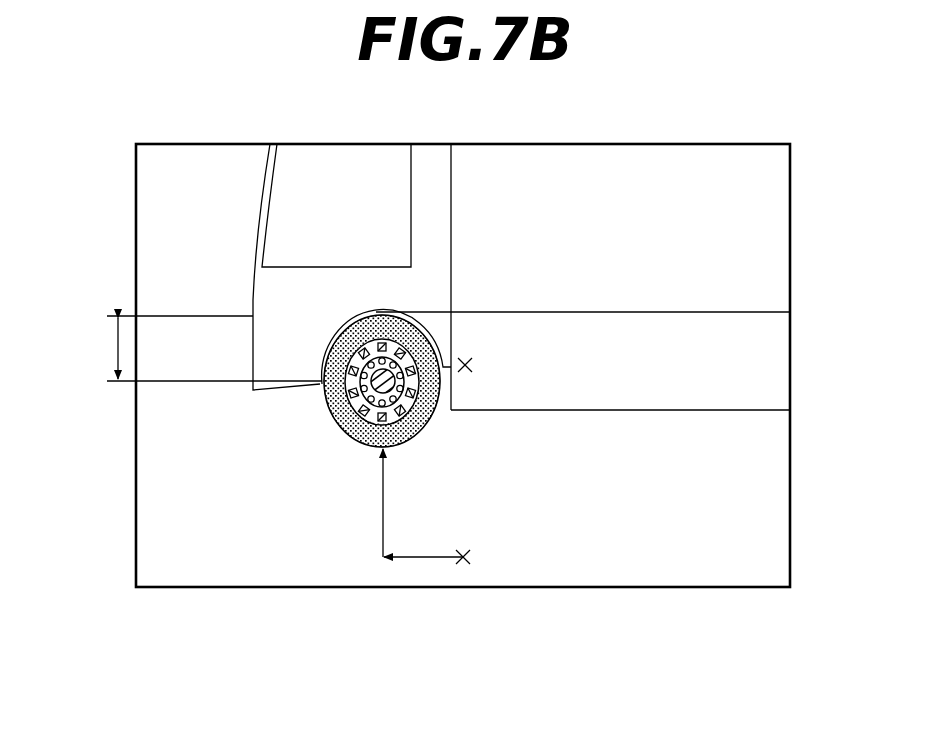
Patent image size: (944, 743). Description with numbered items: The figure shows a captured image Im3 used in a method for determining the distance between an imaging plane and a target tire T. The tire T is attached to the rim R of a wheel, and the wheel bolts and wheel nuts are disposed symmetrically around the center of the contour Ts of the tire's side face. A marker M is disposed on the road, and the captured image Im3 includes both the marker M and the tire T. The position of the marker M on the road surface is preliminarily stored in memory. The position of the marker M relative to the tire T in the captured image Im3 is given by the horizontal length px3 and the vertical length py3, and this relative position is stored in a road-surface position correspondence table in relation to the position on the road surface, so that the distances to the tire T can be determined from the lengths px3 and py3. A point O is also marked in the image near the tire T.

The captured image Im3 is at (669, 145).
The tire T is at (373, 325).
The contour of the side face Ts is at (417, 322).
The rim R is at (354, 352).
The reference point O is at (477, 353).
The marker M is at (457, 563).
The length py3 is at (357, 503).
The length px3 is at (423, 540).